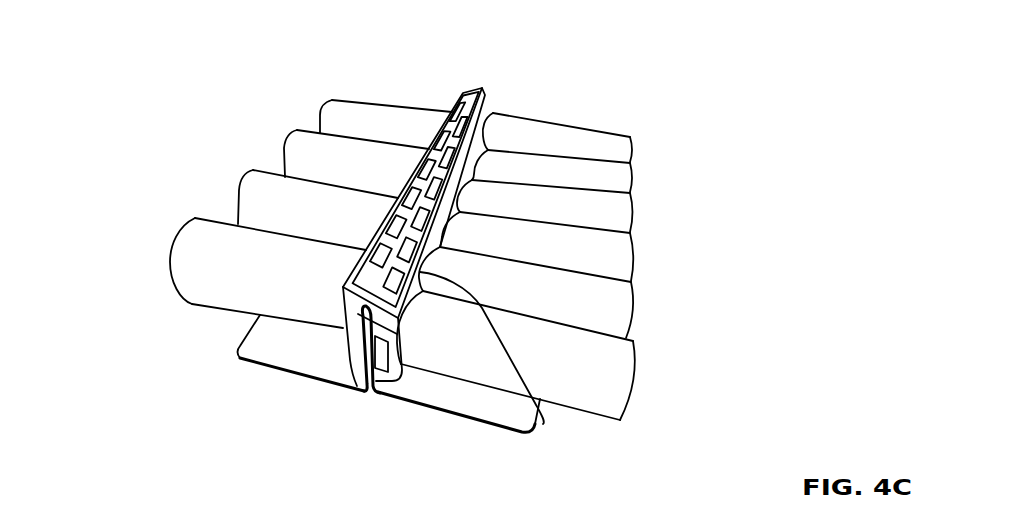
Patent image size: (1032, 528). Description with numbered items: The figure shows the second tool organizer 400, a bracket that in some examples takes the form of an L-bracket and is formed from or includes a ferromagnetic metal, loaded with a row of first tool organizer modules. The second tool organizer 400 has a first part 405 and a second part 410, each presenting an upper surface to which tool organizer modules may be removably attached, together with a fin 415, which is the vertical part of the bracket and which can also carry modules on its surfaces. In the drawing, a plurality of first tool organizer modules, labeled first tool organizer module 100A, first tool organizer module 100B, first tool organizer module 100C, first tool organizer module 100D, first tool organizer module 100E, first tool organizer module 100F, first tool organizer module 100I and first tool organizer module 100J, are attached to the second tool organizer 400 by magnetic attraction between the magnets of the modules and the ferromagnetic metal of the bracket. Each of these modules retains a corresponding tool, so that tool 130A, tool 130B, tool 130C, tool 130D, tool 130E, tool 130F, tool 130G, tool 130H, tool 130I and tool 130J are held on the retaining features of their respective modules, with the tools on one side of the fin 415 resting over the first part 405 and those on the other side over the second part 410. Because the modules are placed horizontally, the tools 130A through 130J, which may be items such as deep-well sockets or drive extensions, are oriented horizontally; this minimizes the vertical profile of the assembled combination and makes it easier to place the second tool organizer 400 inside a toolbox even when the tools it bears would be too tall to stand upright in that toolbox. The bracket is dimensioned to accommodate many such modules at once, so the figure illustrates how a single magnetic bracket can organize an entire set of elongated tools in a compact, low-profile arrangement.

The second tool organizer 400 is at (250, 392).
The first part 405 is at (305, 358).
The second part 410 is at (460, 400).
The fin 415 is at (480, 92).
The first tool organizer module 100A is at (360, 354).
The first tool organizer module 100B is at (425, 168).
The first tool organizer module 100C is at (443, 128).
The first tool organizer module 100D is at (463, 88).
The first tool organizer module 100E is at (493, 113).
The first tool organizer module 100F is at (478, 166).
The first tool organizer module 100I is at (543, 424).
The first tool organizer module 100J is at (386, 371).
The tool 130A is at (172, 255).
The tool 130B is at (238, 197).
The tool 130C is at (284, 152).
The tool 130D is at (319, 112).
The tool 130E is at (630, 147).
The tool 130F is at (632, 172).
The tool 130G is at (632, 208).
The tool 130H is at (632, 253).
The tool 130I is at (632, 304).
The tool 130J is at (633, 372).